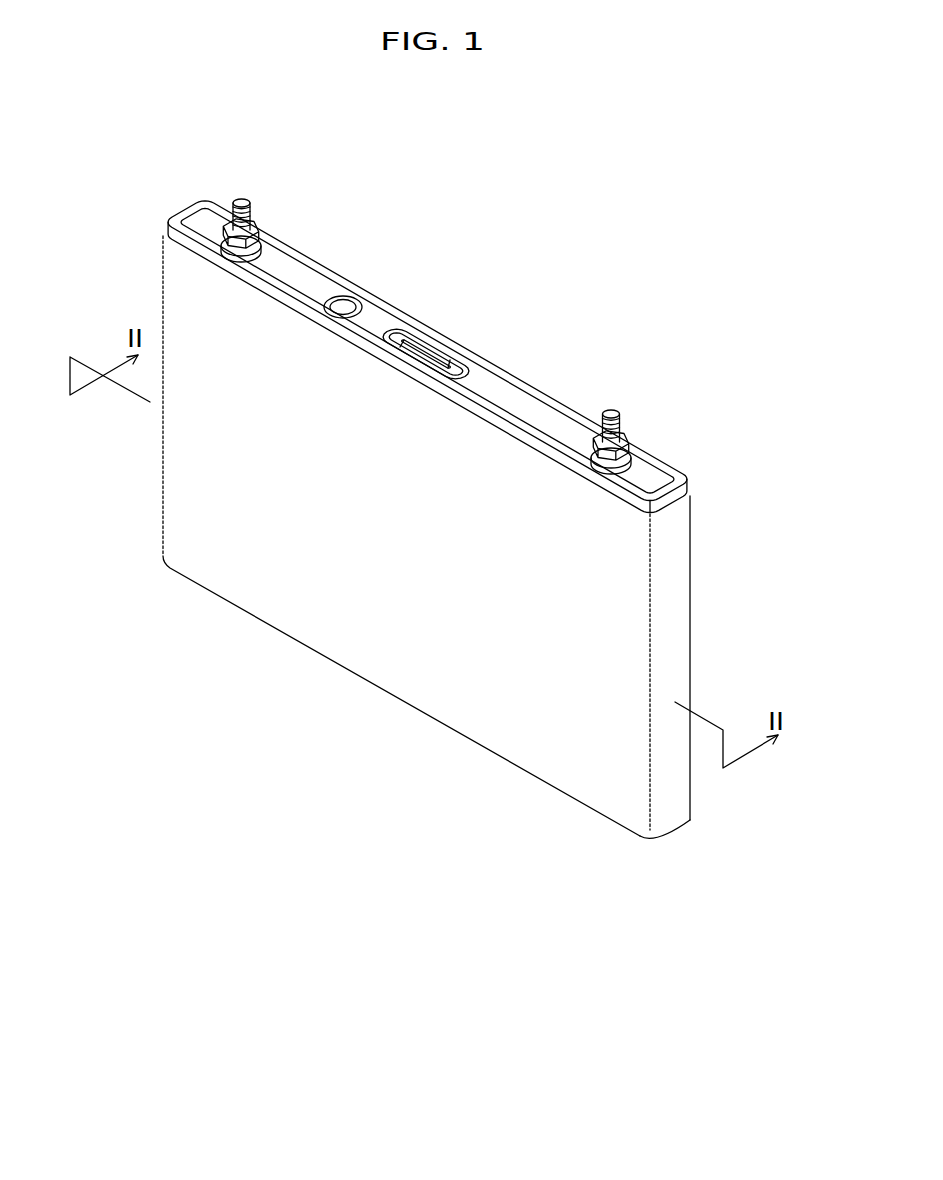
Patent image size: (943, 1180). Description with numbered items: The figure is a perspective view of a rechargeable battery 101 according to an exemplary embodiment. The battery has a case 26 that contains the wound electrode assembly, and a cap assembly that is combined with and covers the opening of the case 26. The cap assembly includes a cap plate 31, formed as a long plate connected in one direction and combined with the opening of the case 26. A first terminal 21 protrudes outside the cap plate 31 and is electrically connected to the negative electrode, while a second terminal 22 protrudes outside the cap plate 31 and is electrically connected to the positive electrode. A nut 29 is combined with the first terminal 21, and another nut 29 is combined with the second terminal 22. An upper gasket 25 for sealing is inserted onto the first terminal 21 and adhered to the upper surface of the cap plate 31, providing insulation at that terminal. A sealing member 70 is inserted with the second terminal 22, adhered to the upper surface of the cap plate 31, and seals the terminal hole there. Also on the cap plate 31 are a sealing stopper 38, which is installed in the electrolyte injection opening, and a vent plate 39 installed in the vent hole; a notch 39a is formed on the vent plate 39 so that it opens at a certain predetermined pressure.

The rechargeable battery 101 is at (526, 357).
The first terminal 21 is at (243, 199).
The second terminal 22 is at (608, 413).
The upper gasket 25 is at (266, 258).
The case 26 is at (355, 637).
The nut 29 is at (254, 226).
The cap plate 31 is at (384, 303).
The sealing stopper 38 is at (343, 303).
The vent plate 39 is at (417, 342).
The notch 39a is at (441, 360).
The sealing member 70 is at (634, 468).